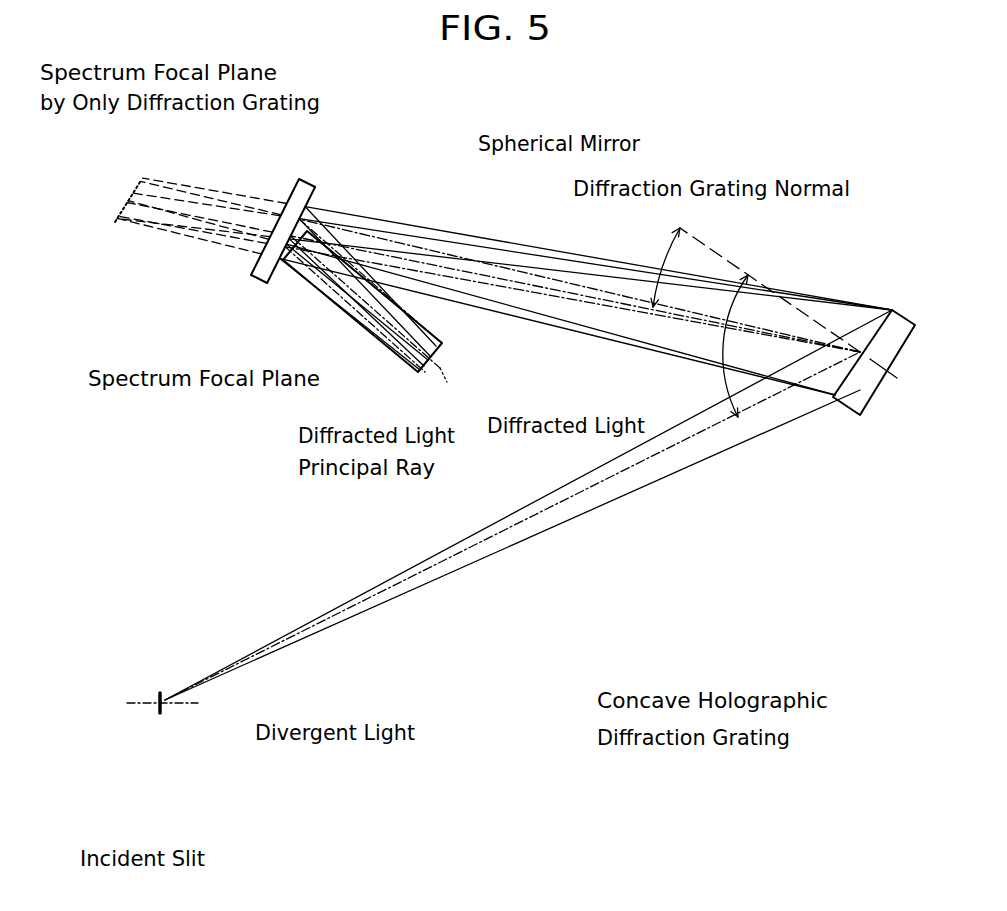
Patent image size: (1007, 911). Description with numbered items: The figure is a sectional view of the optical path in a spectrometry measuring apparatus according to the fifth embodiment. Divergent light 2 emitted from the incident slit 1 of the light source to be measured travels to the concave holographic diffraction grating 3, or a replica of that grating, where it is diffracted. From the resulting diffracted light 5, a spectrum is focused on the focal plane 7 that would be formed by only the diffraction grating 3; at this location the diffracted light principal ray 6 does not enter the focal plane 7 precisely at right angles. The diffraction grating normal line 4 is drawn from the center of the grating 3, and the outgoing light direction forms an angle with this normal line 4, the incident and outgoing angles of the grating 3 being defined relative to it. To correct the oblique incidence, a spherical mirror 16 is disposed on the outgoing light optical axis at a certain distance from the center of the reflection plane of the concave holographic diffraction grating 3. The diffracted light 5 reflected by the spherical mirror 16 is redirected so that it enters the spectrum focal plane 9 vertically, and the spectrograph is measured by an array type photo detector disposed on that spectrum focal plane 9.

The incident slit 1 is at (160, 713).
The divergent light 2 is at (432, 558).
The concave holographic diffraction grating 3 is at (835, 397).
The diffraction grating normal line 4 is at (720, 257).
The diffracted light 5 is at (617, 338).
The diffracted light principal ray 6 is at (510, 288).
The focal plane 7 is at (138, 194).
The spectrum focal plane 9 is at (413, 368).
The spherical mirror 16 is at (309, 185).